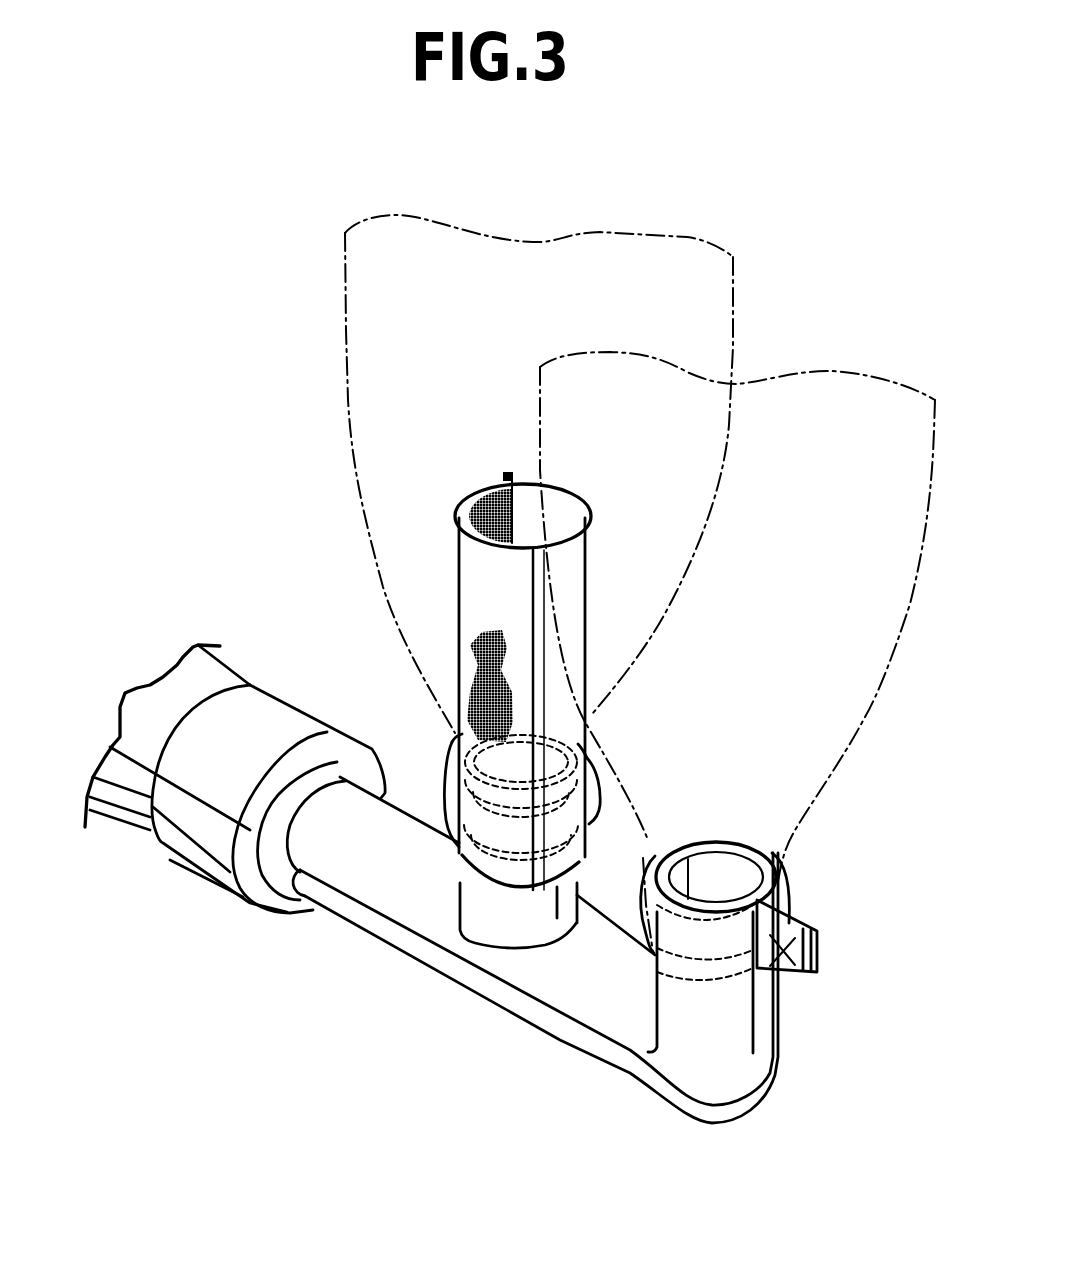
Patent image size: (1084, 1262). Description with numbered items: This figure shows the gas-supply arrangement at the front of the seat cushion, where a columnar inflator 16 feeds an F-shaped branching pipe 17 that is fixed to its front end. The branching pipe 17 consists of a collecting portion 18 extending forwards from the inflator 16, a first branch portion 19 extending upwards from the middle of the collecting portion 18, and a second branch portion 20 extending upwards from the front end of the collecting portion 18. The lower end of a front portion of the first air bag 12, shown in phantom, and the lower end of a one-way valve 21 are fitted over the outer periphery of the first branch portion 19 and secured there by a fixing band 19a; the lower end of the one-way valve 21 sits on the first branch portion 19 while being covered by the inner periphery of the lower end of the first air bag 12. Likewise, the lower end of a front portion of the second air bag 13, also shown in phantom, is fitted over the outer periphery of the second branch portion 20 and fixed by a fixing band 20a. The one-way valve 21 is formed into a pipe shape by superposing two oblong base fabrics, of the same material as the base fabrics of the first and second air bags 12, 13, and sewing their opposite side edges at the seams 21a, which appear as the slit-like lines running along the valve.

The first air bag 12 is at (345, 348).
The second air bag 13 is at (865, 722).
The inflator 16 is at (122, 845).
The branching pipe 17 is at (505, 1015).
The collecting portion 18 is at (373, 923).
The first branch portion 19 is at (470, 898).
The fixing band 19a is at (612, 799).
The second branch portion 20 is at (740, 1022).
The fixing band 20a is at (645, 913).
The one-way valve 21 is at (450, 538).
The sewn side edges 21a is at (506, 475).